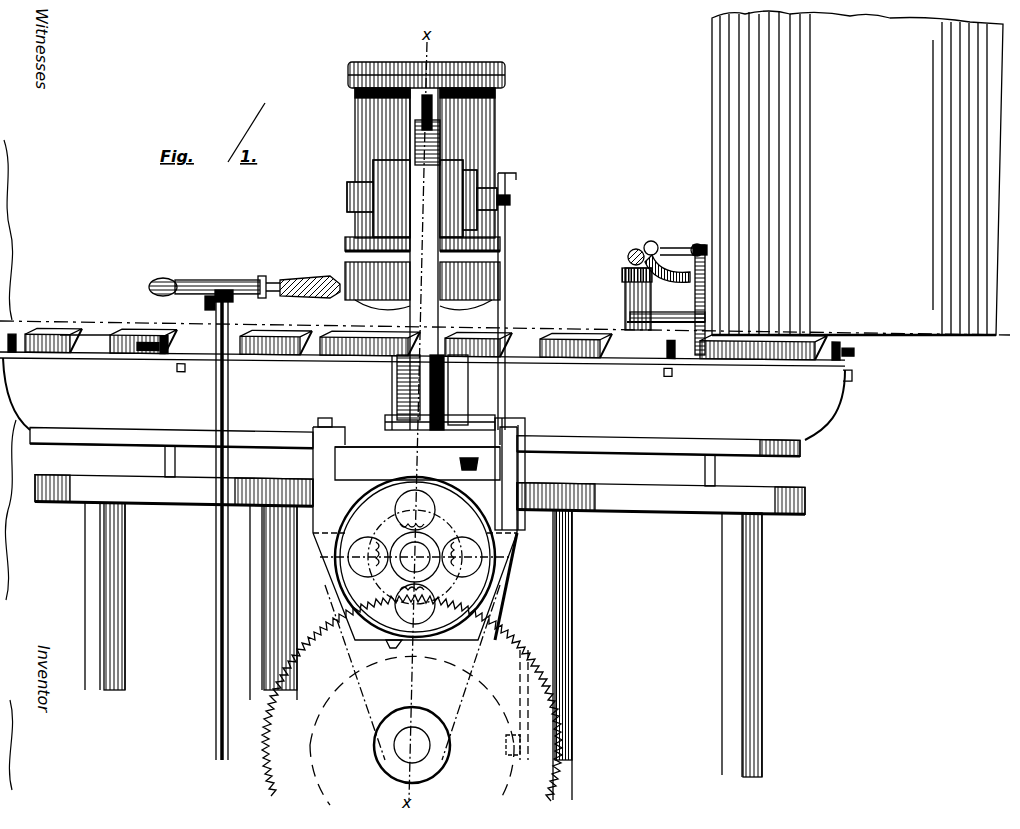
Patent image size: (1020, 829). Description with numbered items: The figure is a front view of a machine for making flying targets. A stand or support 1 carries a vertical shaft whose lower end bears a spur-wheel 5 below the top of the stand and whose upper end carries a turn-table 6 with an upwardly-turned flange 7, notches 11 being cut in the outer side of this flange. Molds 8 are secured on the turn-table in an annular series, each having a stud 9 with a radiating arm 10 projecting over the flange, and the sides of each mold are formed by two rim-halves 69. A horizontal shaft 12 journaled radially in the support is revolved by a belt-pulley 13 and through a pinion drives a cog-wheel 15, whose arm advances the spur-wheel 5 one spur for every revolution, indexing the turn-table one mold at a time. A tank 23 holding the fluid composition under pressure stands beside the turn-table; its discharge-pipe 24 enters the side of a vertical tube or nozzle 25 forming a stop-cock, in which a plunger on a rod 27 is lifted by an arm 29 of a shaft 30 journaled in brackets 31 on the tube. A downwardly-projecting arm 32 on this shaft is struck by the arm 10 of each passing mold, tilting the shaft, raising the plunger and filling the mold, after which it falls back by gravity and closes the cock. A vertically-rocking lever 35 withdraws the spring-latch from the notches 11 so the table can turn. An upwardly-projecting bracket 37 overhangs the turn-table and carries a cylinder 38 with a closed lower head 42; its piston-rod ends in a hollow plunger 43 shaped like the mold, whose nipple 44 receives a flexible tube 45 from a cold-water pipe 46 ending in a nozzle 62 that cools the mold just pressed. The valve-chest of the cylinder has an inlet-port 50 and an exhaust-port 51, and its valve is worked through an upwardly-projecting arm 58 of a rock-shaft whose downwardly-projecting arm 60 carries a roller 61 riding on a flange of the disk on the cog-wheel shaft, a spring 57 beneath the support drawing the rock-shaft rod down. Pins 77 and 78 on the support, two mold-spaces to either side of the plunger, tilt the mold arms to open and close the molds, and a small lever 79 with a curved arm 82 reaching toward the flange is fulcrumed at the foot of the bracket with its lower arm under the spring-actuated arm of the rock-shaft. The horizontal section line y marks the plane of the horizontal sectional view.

The stand or support 1 is at (630, 490).
The spur-wheel 5 is at (415, 557).
The turn-table 6 is at (100, 438).
The upwardly-turned flange or rim 7 is at (422, 396).
The molds 8 is at (426, 336).
The stud 9 is at (14, 336).
The radiating arm 10 is at (146, 341).
The notches 11 is at (178, 376).
The horizontal shaft 12 is at (415, 557).
The belt-pulley 13 is at (455, 522).
The cog-wheel 15 is at (412, 695).
The tank 23 is at (857, 173).
The discharge-pipe 24 is at (670, 312).
The vertical tube or nozzle 25 is at (625, 296).
The rod 27 is at (628, 258).
The arm 29 is at (644, 244).
The shaft 30 is at (685, 248).
The brackets 31 is at (670, 270).
The downwardly-projecting arm 32 is at (703, 272).
The vertically-rocking lever 35 is at (398, 463).
The upwardly-projecting bracket 37 is at (424, 259).
The cylinder 38 is at (428, 166).
The closed lower head 42 is at (345, 240).
The hollow plunger 43 is at (470, 286).
The nipple 44 is at (338, 280).
The flexible tube 45 is at (244, 275).
The cold-water pipe 46 is at (216, 517).
The inlet-port 50 is at (495, 108).
The exhaust-port 51 is at (440, 414).
The spring 57 is at (457, 464).
The upwardly-projecting arm 58 is at (505, 292).
The downwardly-projecting arm 60 is at (525, 466).
The roller 61 is at (503, 705).
The nozzle 62 is at (204, 301).
The rim-halves 69 is at (72, 338).
The upwardly-projecting pin 77 is at (182, 461).
The upwardly-projecting pin 78 is at (705, 468).
The small lever 79 is at (468, 388).
The curved arm 82 is at (424, 392).
The section line y y is at (860, 340).